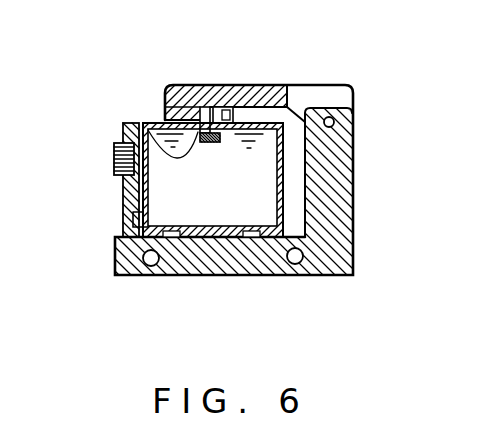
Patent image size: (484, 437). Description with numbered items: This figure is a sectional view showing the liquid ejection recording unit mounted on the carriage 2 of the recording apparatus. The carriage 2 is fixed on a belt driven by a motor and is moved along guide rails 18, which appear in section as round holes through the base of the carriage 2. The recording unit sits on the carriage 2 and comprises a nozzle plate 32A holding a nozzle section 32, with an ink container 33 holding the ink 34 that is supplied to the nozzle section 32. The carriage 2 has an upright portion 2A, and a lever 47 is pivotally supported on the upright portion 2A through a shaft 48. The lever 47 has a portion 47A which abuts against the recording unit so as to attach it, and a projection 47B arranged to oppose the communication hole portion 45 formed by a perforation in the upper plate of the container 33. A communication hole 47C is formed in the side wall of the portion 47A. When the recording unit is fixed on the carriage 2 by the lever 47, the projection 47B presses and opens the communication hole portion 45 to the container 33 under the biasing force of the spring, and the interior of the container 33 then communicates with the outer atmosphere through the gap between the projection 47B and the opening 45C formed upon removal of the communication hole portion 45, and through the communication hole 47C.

The carriage 2 is at (328, 276).
The upright portion 2A is at (340, 184).
The guide rails 18 is at (151, 267).
The nozzle section 32 is at (114, 160).
The nozzle plate 32A is at (122, 200).
The ink container 33 is at (283, 230).
The ink 34 is at (162, 212).
The communication hole portion 45 is at (138, 123).
The opening 45C is at (202, 128).
The lever 47 is at (272, 88).
The portion of the lever 47A is at (164, 104).
The projection 47B is at (204, 108).
The communication hole 47C is at (232, 95).
The shaft 48 is at (335, 123).